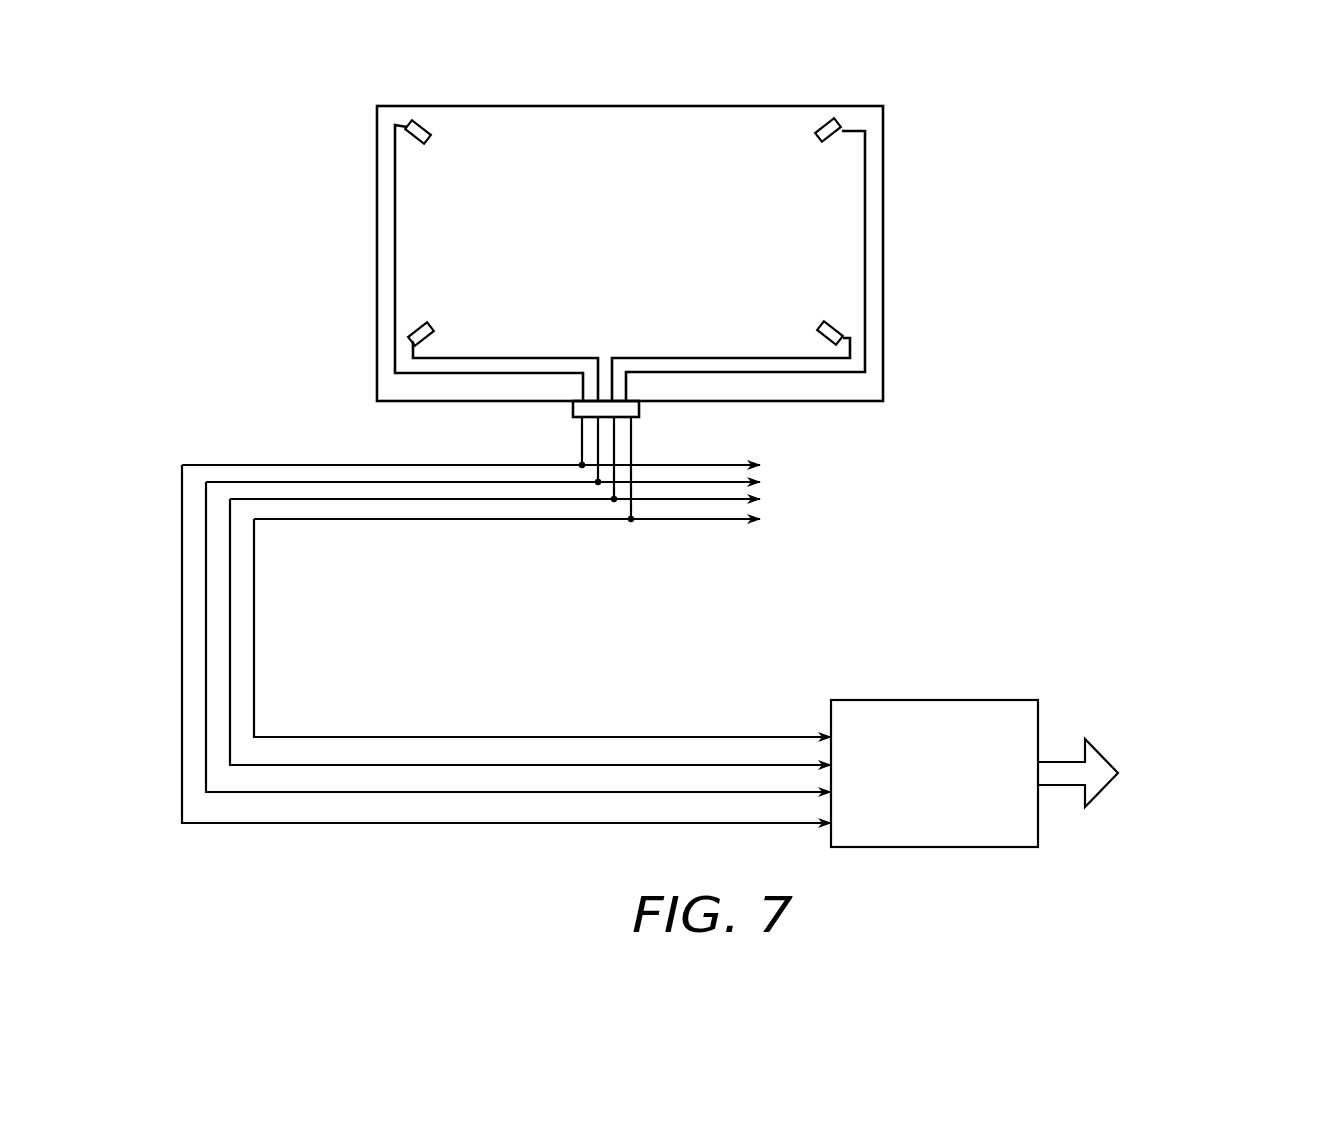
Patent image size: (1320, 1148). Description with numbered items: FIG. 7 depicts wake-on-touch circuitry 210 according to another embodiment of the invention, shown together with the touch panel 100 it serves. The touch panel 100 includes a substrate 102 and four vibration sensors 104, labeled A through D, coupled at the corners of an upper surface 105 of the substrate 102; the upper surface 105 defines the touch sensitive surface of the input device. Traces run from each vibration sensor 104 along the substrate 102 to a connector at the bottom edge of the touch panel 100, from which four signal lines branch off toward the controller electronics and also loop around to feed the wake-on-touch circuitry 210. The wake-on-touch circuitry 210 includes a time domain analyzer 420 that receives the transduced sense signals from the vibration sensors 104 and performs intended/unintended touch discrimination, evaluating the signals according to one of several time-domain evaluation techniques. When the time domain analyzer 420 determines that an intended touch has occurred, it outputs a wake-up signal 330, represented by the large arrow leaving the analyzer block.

The touch panel 100 is at (335, 232).
The substrate 102 is at (862, 401).
The vibration sensors 104 is at (425, 122).
The upper surface 105 is at (648, 242).
The wake-on-touch circuitry 210 is at (231, 362).
The wake-up signal 330 is at (1203, 755).
The time domain analyzer 420 is at (1018, 700).